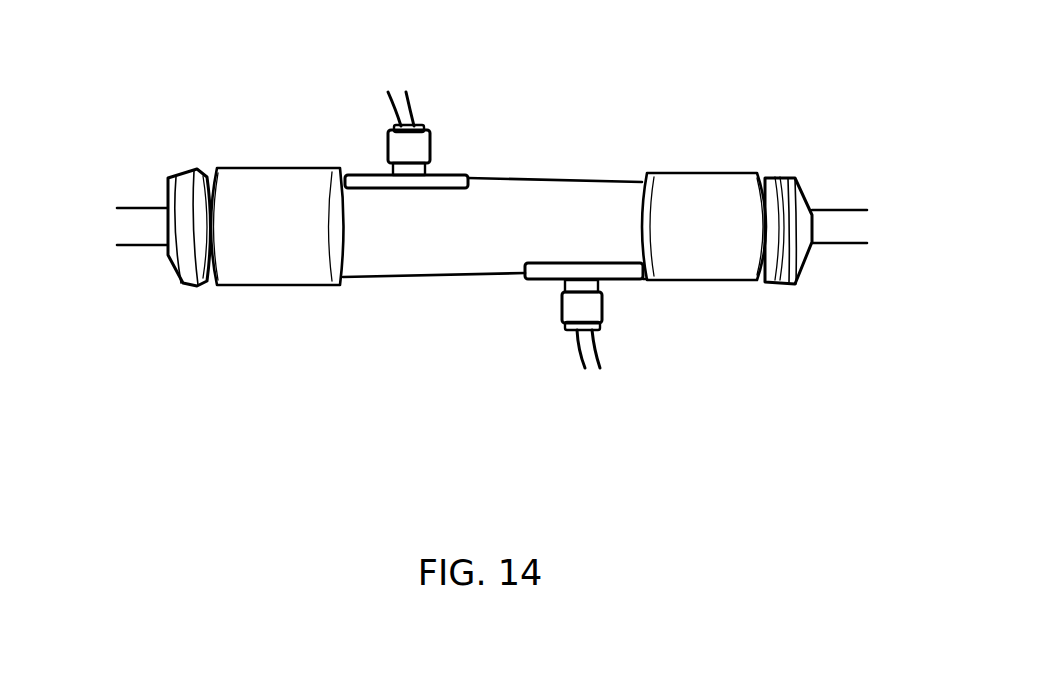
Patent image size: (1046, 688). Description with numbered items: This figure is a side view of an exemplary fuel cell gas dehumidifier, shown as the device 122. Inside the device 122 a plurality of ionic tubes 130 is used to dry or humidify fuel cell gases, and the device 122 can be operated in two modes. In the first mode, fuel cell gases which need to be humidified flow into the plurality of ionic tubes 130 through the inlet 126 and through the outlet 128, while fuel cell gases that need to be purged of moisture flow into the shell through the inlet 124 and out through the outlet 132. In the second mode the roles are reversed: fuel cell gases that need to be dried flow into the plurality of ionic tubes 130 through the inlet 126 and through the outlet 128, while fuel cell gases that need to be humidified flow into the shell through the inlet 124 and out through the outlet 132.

The device 122 is at (480, 160).
The inlet 124 is at (383, 113).
The inlet 126 is at (798, 253).
The outlet 128 is at (157, 256).
The ionic tubes 130 is at (458, 248).
The outlet 132 is at (558, 312).